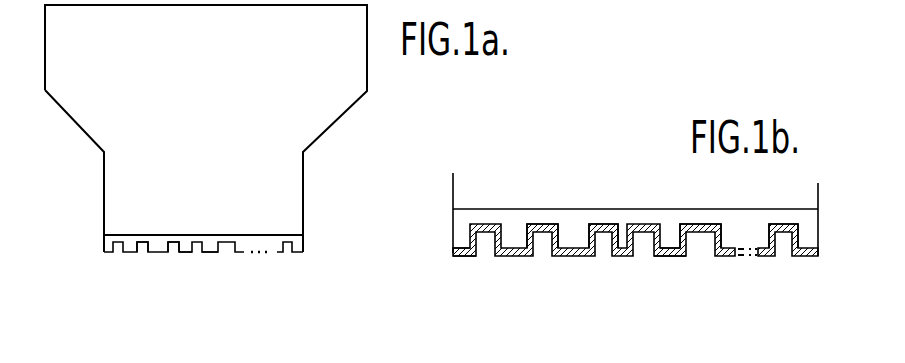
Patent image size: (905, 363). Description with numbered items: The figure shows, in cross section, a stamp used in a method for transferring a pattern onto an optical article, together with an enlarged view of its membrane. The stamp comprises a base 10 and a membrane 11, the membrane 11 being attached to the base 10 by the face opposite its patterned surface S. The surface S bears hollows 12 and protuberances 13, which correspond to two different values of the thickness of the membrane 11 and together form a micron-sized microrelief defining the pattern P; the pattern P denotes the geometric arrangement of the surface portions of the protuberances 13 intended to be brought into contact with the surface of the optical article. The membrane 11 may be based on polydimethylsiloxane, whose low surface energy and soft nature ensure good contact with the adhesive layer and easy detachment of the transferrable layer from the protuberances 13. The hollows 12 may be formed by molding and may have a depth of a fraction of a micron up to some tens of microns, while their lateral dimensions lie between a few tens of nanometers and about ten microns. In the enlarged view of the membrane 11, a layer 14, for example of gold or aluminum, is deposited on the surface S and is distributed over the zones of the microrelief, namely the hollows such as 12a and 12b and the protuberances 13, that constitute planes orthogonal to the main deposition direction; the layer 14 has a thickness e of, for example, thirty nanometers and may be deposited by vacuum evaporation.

In FIG. 1a, the base 10 is at (320, 88).
In FIG. 1b, the base 10 is at (642, 193).
In FIG. 1a, the membrane 11 is at (303, 242).
In FIG. 1b, the membrane 11 is at (463, 229).
In FIG. 1a, the hollows 12 is at (173, 248).
In FIG. 1b, the hollows 12 is at (540, 243).
In FIG. 1b, the end tooth 12a is at (780, 234).
In FIG. 1b, the zone of the microrelief 12b is at (693, 228).
In FIG. 1a, the protuberances 13 is at (185, 250).
In FIG. 1b, the protuberances 13 is at (631, 256).
In FIG. 1b, the layer 14 is at (463, 253).
In FIG. 1a, the surface S is at (98, 238).
In FIG. 1a, the pattern P is at (227, 298).
In FIG. 1b, the pattern P is at (680, 303).
In FIG. 1b, the thickness e is at (505, 230).